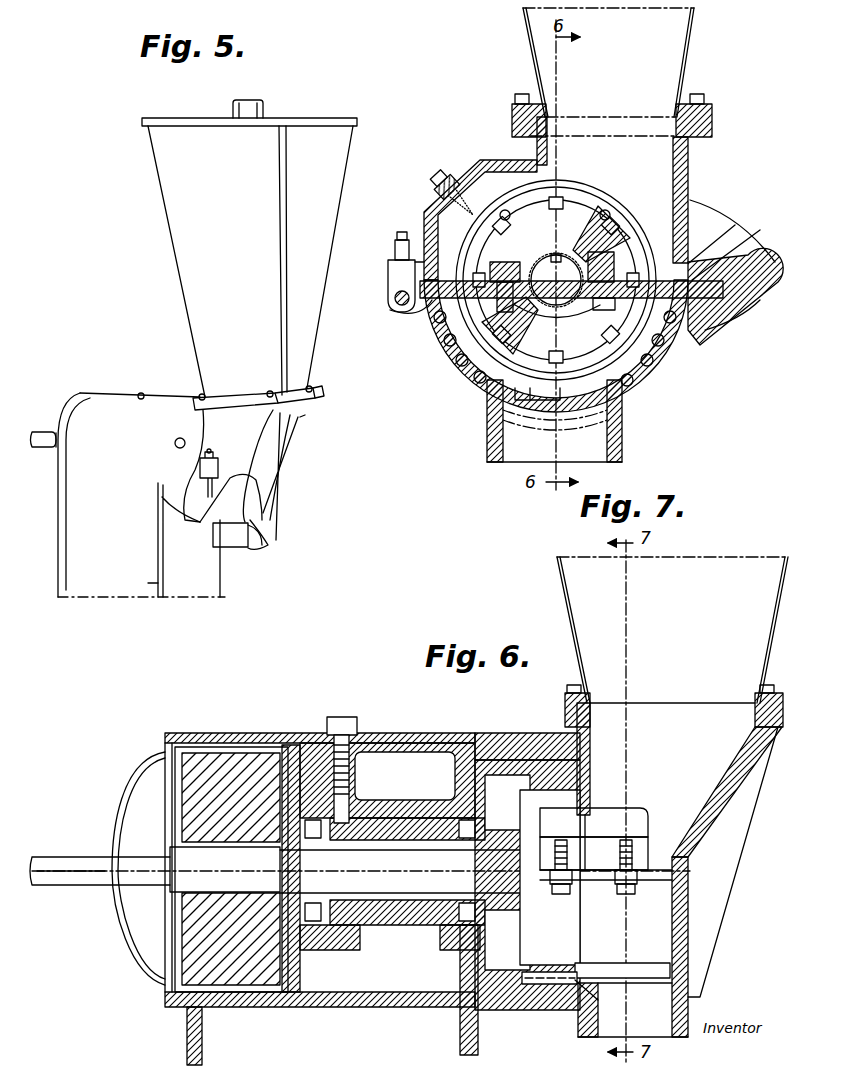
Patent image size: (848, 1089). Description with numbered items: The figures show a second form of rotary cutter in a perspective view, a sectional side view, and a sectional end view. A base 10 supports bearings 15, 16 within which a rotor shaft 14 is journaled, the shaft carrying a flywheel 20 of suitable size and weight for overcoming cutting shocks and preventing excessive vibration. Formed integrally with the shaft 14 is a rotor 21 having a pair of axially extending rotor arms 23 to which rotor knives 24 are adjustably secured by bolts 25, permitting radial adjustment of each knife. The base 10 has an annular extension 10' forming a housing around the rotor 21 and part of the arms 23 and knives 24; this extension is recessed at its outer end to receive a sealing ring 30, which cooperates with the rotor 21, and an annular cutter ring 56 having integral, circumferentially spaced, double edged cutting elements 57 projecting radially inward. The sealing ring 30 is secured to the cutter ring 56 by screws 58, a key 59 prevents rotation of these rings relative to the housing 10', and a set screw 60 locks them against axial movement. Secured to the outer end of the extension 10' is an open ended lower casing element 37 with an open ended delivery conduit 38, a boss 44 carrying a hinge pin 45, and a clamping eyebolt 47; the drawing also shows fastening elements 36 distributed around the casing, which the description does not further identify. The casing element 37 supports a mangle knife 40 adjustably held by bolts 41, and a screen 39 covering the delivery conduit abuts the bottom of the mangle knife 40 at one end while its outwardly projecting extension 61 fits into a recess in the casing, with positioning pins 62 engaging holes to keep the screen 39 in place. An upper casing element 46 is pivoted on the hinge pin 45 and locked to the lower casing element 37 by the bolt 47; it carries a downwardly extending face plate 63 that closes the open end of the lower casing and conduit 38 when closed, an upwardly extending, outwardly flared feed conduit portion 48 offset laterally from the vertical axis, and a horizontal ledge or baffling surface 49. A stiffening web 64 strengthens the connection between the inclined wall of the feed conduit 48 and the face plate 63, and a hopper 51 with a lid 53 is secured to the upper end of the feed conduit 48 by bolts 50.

In FIG. 5, the base 10 is at (169, 584).
In FIG. 6, the base 10 is at (296, 899).
In FIG. 5, the annular extension 10' is at (179, 540).
In FIG. 6, the annular extension 10' is at (527, 902).
In FIG. 5, the rotor shaft 14 is at (46, 432).
In FIG. 7, the rotor shaft 14 is at (540, 262).
In FIG. 6, the rotor shaft 14 is at (60, 857).
In FIG. 6, the bearing 15 is at (349, 800).
In FIG. 6, the bearing 16 is at (440, 820).
In FIG. 6, the flywheel 20 is at (238, 755).
In FIG. 7, the rotor 21 is at (615, 220).
In FIG. 6, the rotor 21 is at (458, 950).
In FIG. 7, the rotor arm 23 is at (556, 245).
In FIG. 6, the rotor arm 23 is at (633, 810).
In FIG. 7, the rotor knife 24 is at (571, 289).
In FIG. 6, the rotor knife 24 is at (645, 850).
In FIG. 7, the bolt 25 is at (608, 300).
In FIG. 6, the bolt 25 is at (590, 884).
In FIG. 6, the sealing ring 30 is at (530, 740).
In FIG. 7, the bolt 36 is at (437, 322).
In FIG. 5, the lower casing element 37 is at (215, 518).
In FIG. 7, the lower casing element 37 is at (640, 395).
In FIG. 6, the lower casing element 37 is at (598, 1012).
In FIG. 5, the delivery conduit 38 is at (226, 548).
In FIG. 7, the delivery conduit 38 is at (500, 440).
In FIG. 6, the delivery conduit 38 is at (606, 1032).
In FIG. 7, the screen 39 is at (565, 388).
In FIG. 6, the screen 39 is at (612, 963).
In FIG. 7, the mangle knife 40 is at (695, 240).
In FIG. 6, the mangle knife 40 is at (688, 880).
In FIG. 7, the bolt 41 is at (715, 258).
In FIG. 7, the shoulder or boss 44 is at (725, 320).
In FIG. 7, the hinge pin 45 is at (770, 275).
In FIG. 5, the upper casing element 46 is at (250, 442).
In FIG. 7, the upper casing element 46 is at (688, 210).
In FIG. 6, the upper casing element 46 is at (590, 748).
In FIG. 5, the clamping eyebolt 47 is at (215, 458).
In FIG. 7, the clamping eyebolt 47 is at (392, 258).
In FIG. 5, the feed conduit portion 48 is at (316, 396).
In FIG. 7, the feed conduit portion 48 is at (547, 128).
In FIG. 6, the feed conduit portion 48 is at (758, 760).
In FIG. 7, the ledge or baffling surface 49 is at (470, 170).
In FIG. 5, the bolt 50 is at (311, 386).
In FIG. 7, the bolt 50 is at (697, 96).
In FIG. 6, the bolt 50 is at (770, 690).
In FIG. 5, the hopper 51 is at (307, 356).
In FIG. 7, the hopper 51 is at (690, 50).
In FIG. 6, the hopper 51 is at (773, 645).
In FIG. 5, the lid or cover 53 is at (268, 114).
In FIG. 7, the cutter ring 56 is at (560, 320).
In FIG. 6, the cutter ring 56 is at (587, 775).
In FIG. 7, the cutting element 57 is at (560, 225).
In FIG. 7, the screw 58 is at (565, 190).
In FIG. 7, the key 59 is at (562, 420).
In FIG. 6, the key 59 is at (550, 985).
In FIG. 5, the set screw 60 is at (180, 437).
In FIG. 7, the set screw 60 is at (445, 178).
In FIG. 7, the extension 61 is at (410, 312).
In FIG. 7, the positioning pin 62 is at (430, 325).
In FIG. 5, the face plate 63 is at (262, 548).
In FIG. 6, the face plate 63 is at (690, 960).
In FIG. 5, the stiffening web 64 is at (270, 490).
In FIG. 6, the stiffening web 64 is at (748, 862).